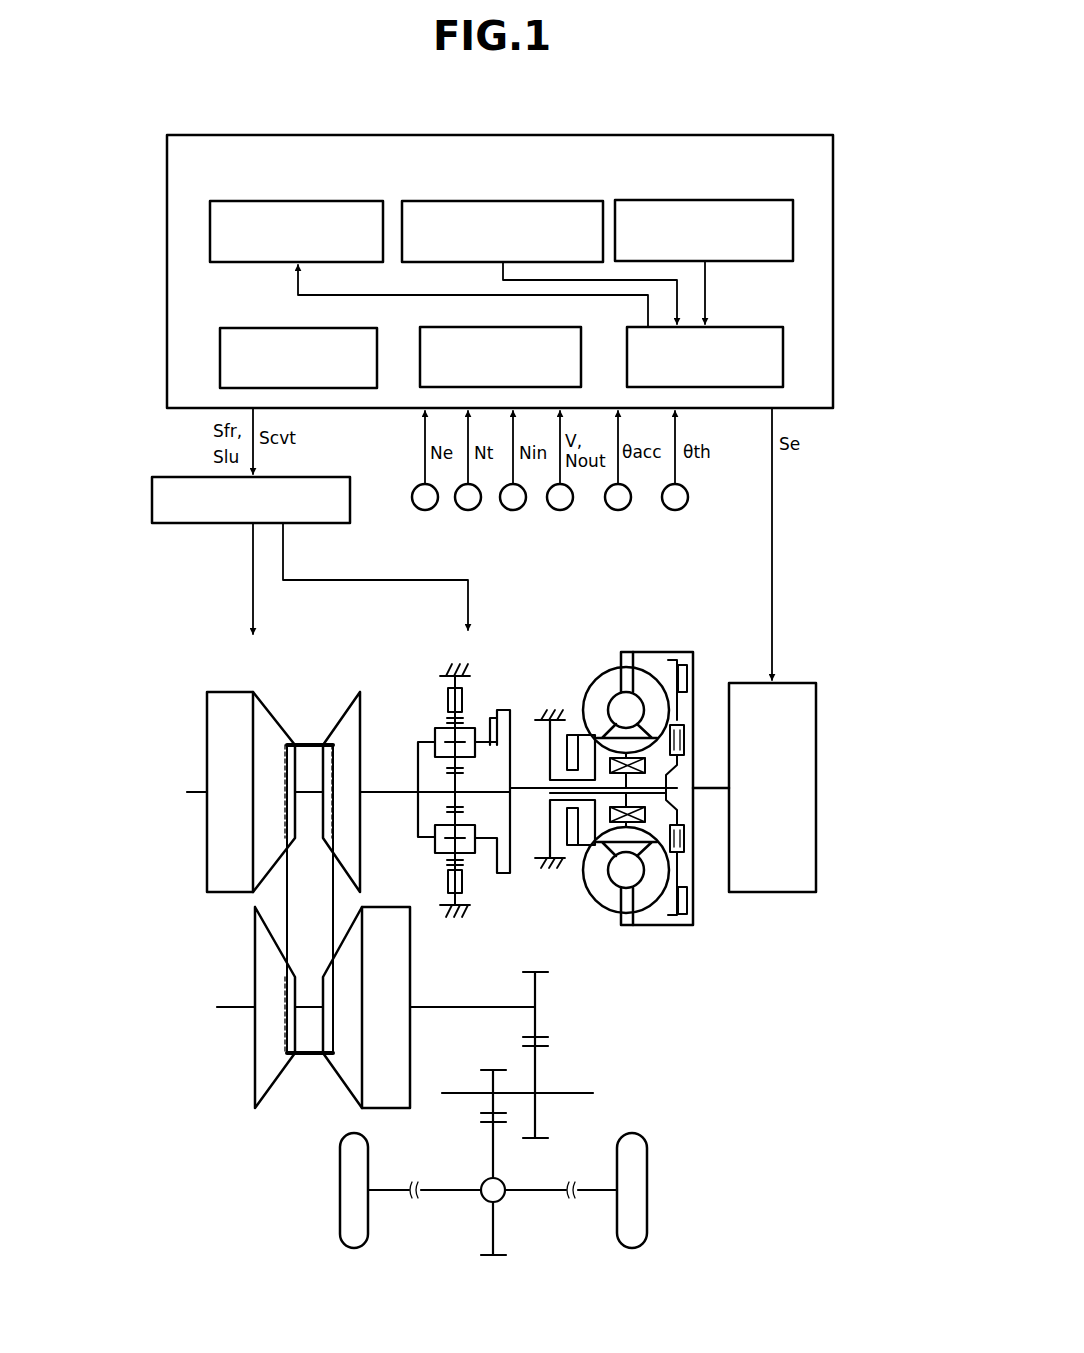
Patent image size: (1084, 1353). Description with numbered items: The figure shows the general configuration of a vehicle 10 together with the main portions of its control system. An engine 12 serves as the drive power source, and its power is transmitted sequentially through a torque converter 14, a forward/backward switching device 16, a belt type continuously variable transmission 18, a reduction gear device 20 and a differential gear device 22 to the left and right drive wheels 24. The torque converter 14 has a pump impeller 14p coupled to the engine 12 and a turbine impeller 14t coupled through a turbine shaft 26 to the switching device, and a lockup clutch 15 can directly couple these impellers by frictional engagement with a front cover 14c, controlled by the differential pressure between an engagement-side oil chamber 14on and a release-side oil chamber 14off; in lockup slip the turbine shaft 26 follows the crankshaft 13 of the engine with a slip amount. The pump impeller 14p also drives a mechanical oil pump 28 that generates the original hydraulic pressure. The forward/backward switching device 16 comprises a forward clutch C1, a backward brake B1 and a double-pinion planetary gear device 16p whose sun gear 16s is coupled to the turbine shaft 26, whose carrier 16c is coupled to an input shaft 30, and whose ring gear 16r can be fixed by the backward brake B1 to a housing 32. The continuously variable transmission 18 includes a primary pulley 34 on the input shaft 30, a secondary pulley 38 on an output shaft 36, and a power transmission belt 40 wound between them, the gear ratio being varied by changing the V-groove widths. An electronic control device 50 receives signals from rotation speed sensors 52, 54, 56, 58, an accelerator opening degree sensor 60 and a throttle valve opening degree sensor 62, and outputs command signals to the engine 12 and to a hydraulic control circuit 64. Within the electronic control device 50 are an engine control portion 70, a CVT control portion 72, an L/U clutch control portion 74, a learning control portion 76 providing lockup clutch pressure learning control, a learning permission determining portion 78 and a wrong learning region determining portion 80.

The vehicle 10 is at (762, 92).
The engine 12 is at (790, 876).
The crankshaft 13 is at (712, 792).
The torque converter 14 is at (654, 787).
The pump impeller 14p is at (599, 898).
The turbine impeller 14t is at (642, 904).
The front cover 14c is at (690, 872).
The engagement-side oil chamber 14on is at (668, 908).
The release-side oil chamber 14off is at (688, 878).
The lockup clutch 15 is at (684, 650).
The forward/backward switching device 16 is at (484, 608).
The planetary gear device 16p is at (453, 650).
The carrier 16c is at (436, 732).
The sun gear 16s is at (448, 803).
The ring gear 16r is at (447, 879).
The backward brake B1 is at (442, 705).
The forward clutch C1 is at (493, 780).
The belt type continuously variable transmission 18 is at (289, 1156).
The reduction gear device 20 is at (600, 1056).
The differential gear device 22 is at (489, 1199).
The drive wheels 24 is at (346, 1215).
The turbine shaft 26 is at (525, 797).
The mechanical oil pump 28 is at (573, 735).
The input shaft 30 is at (385, 790).
The housing 32 is at (470, 665).
The primary pulley 34 is at (234, 907).
The output shaft 36 is at (472, 1010).
The secondary pulley 38 is at (270, 1118).
The power transmission belt 40 is at (311, 740).
The electronic control device 50 is at (782, 139).
The rotation speed sensor 52 is at (427, 510).
The rotation speed sensor 54 is at (470, 510).
The rotation speed sensor 56 is at (515, 510).
The rotation speed sensor 58 is at (562, 510).
The accelerator opening degree sensor 60 is at (620, 510).
The throttle valve opening degree sensor 62 is at (677, 510).
The hydraulic control circuit 64 is at (216, 524).
The engine control portion 70 is at (332, 333).
The CVT control portion 72 is at (540, 333).
The L/U clutch control portion 74 is at (742, 333).
The learning control portion 76 is at (332, 207).
The learning permission determining portion 78 is at (540, 207).
The wrong learning region determining portion 80 is at (742, 203).